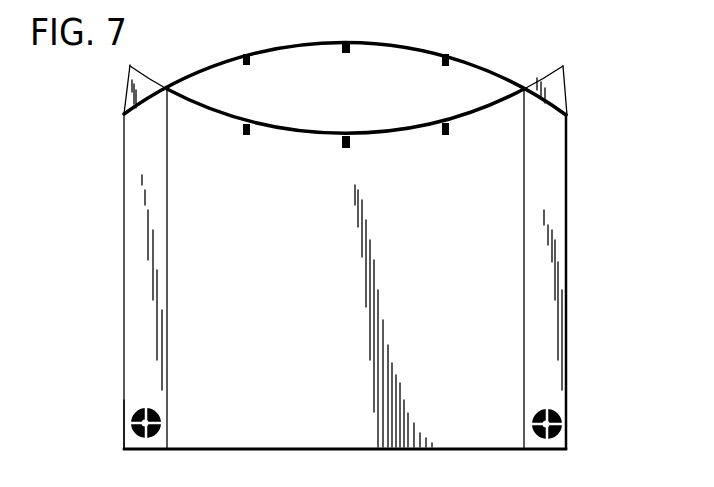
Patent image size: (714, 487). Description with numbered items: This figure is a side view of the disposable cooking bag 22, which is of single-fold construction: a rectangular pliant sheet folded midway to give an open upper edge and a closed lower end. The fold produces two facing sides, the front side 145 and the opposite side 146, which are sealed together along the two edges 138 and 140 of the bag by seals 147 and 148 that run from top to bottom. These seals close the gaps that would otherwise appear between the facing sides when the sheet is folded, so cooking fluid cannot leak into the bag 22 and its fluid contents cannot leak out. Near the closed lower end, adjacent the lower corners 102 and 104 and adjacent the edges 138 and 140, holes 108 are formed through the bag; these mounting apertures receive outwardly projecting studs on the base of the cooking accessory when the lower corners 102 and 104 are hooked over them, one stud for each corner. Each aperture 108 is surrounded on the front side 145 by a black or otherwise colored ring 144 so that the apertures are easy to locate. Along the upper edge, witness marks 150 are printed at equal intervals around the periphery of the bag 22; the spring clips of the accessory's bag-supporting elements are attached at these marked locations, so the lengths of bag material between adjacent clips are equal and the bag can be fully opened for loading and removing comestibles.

The disposable cooking bag 22 is at (312, 33).
The lower corner 102 is at (123, 452).
The lower corner 104 is at (568, 450).
The hole 108 is at (134, 416).
The edge 138 is at (124, 182).
The edge 140 is at (568, 172).
The ring 144 is at (160, 418).
The front side 145 is at (331, 224).
The side 146 is at (360, 103).
The seal 147 is at (168, 110).
The seal 148 is at (524, 141).
The witness mark 150 is at (445, 52).